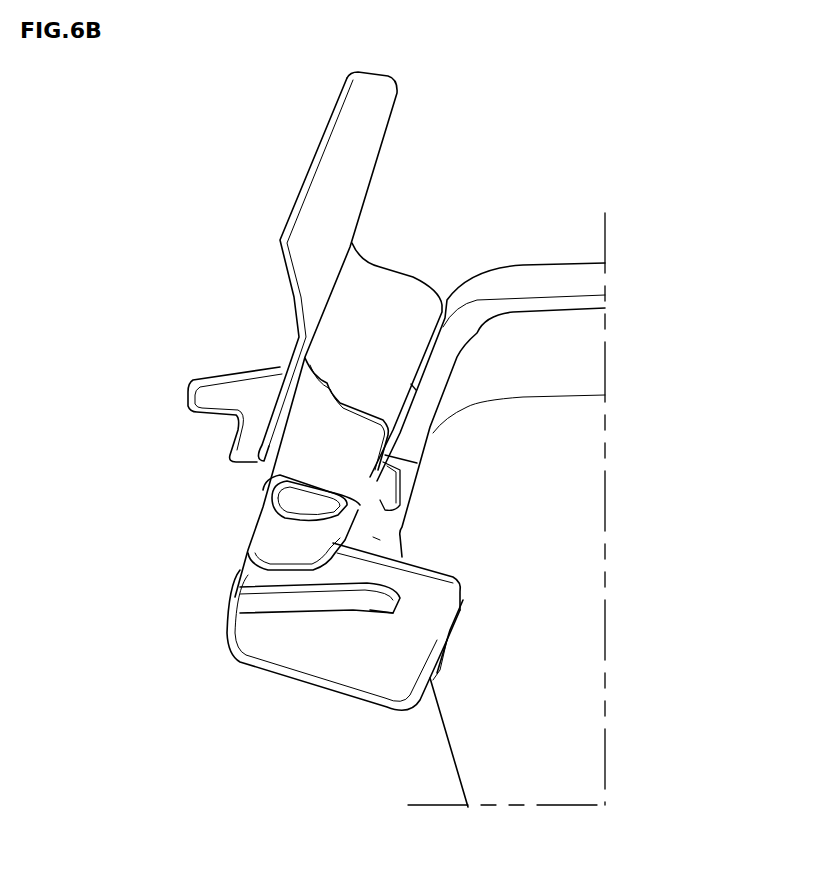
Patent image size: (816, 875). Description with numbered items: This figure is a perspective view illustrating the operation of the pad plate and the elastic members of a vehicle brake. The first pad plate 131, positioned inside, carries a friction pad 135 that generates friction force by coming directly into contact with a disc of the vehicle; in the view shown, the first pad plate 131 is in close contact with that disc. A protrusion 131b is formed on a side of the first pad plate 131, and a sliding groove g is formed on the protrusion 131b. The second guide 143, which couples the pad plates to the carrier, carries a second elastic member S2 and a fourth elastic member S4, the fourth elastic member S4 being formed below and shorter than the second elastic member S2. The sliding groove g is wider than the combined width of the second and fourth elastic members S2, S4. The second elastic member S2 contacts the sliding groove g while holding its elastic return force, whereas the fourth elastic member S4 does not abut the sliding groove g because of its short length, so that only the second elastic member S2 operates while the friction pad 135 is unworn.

The second guide 143 is at (303, 180).
The first pad plate 131 is at (528, 277).
The protrusion 131b is at (415, 600).
The friction pad 135 is at (570, 562).
The second elastic member S2 is at (275, 537).
The fourth elastic member S4 is at (258, 592).
The sliding groove g is at (373, 537).